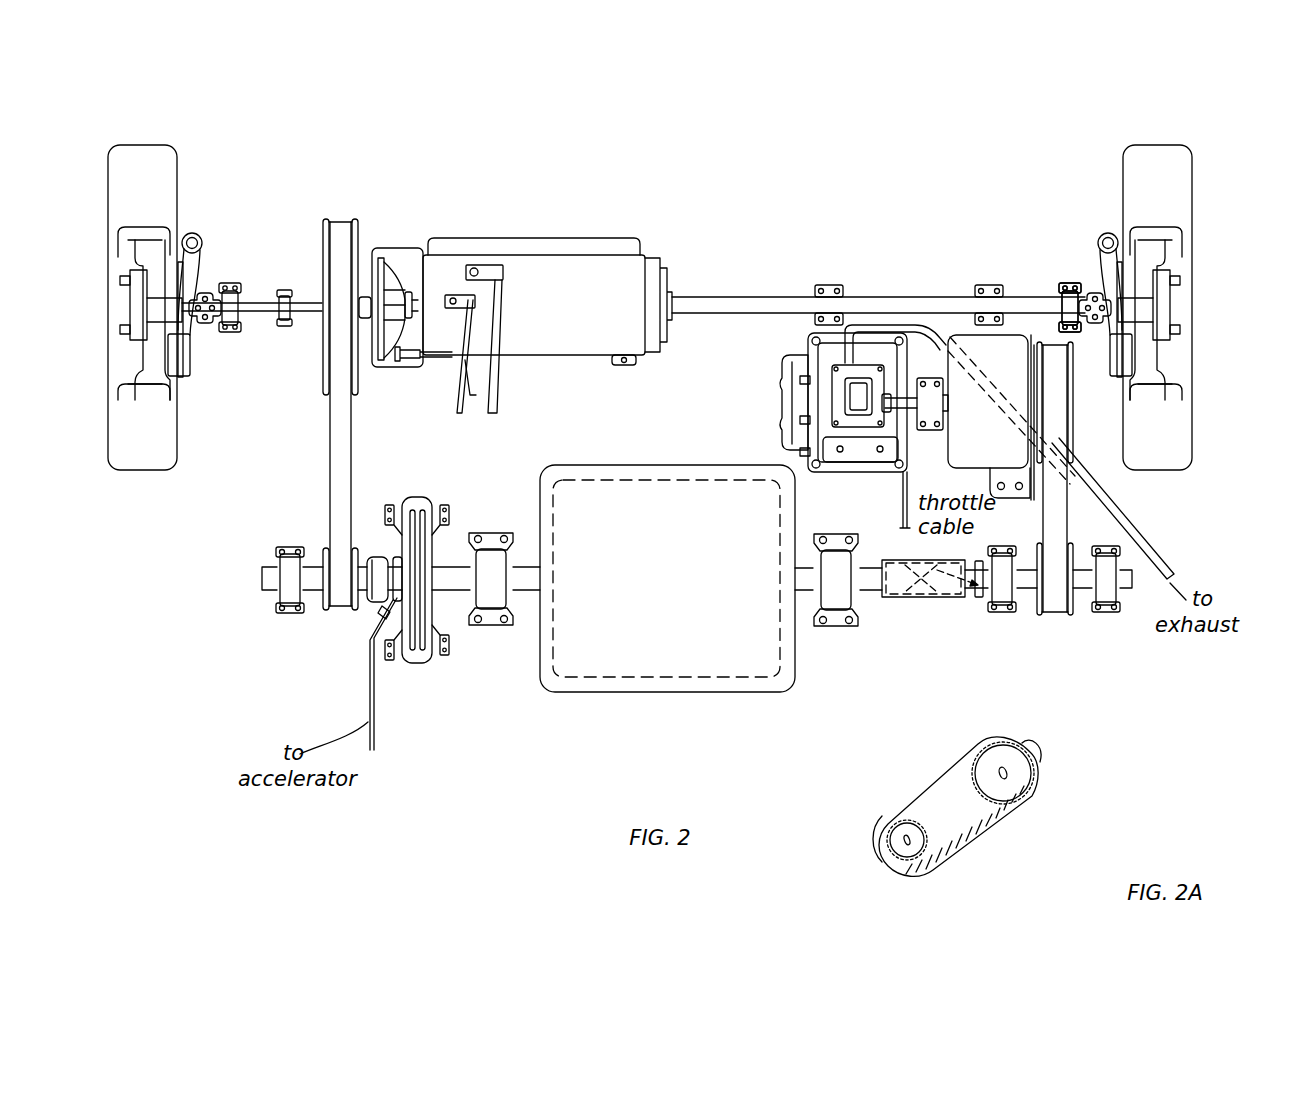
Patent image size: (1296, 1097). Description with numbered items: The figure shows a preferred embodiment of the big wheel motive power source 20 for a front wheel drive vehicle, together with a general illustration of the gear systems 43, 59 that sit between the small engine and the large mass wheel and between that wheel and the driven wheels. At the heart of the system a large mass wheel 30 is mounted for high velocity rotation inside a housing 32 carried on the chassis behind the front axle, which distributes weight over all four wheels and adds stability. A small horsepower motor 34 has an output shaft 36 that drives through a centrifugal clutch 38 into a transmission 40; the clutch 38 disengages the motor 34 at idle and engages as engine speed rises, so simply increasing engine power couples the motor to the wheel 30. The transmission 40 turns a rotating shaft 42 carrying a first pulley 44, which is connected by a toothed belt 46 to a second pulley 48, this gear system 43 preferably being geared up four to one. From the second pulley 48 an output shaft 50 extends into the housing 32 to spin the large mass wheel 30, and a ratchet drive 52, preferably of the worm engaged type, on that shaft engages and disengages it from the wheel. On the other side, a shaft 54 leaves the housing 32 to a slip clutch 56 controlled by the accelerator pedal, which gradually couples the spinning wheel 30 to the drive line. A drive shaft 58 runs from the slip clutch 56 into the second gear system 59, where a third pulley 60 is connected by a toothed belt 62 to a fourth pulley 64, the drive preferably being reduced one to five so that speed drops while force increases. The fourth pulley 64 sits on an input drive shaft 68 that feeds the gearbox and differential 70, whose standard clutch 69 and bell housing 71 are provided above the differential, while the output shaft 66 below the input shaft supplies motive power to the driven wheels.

In FIG. 2, the big wheel motive power source 20 is at (708, 180).
In FIG. 2, the large mass wheel 30 is at (640, 662).
In FIG. 2, the housing 32 is at (788, 638).
In FIG. 2, the small horsepower motor 34 is at (809, 386).
In FIG. 2, the output shaft 36 is at (888, 395).
In FIG. 2, the centrifugal clutch 38 is at (932, 384).
In FIG. 2, the transmission 40 is at (976, 352).
In FIG. 2, the rotating shaft 42 is at (1014, 362).
In FIG. 2, the gear system 43 is at (1092, 417).
In FIG. 2A, the gear system 43 is at (920, 779).
In FIG. 2, the first pulley 44 is at (1072, 357).
In FIG. 2A, the first pulley 44 is at (1017, 764).
In FIG. 2, the toothed belt 46 is at (1057, 497).
In FIG. 2A, the toothed belt 46 is at (974, 821).
In FIG. 2, the second pulley 48 is at (1062, 600).
In FIG. 2A, the second pulley 48 is at (912, 854).
In FIG. 2, the output shaft 50 is at (1028, 584).
In FIG. 2, the ratchet drive 52 is at (928, 596).
In FIG. 2, the shaft 54 is at (528, 586).
In FIG. 2, the slip clutch 56 is at (417, 662).
In FIG. 2, the drive shaft 58 is at (365, 592).
In FIG. 2, the gear system 59 is at (286, 440).
In FIG. 2, the third pulley 60 is at (322, 602).
In FIG. 2, the toothed belt 62 is at (340, 497).
In FIG. 2, the fourth pulley 64 is at (322, 226).
In FIG. 2, the output shaft 66 is at (303, 302).
In FIG. 2, the input drive shaft 68 is at (371, 300).
In FIG. 2, the clutch 69 is at (393, 273).
In FIG. 2, the gearbox and differential 70 is at (570, 305).
In FIG. 2, the bell housing 71 is at (411, 248).